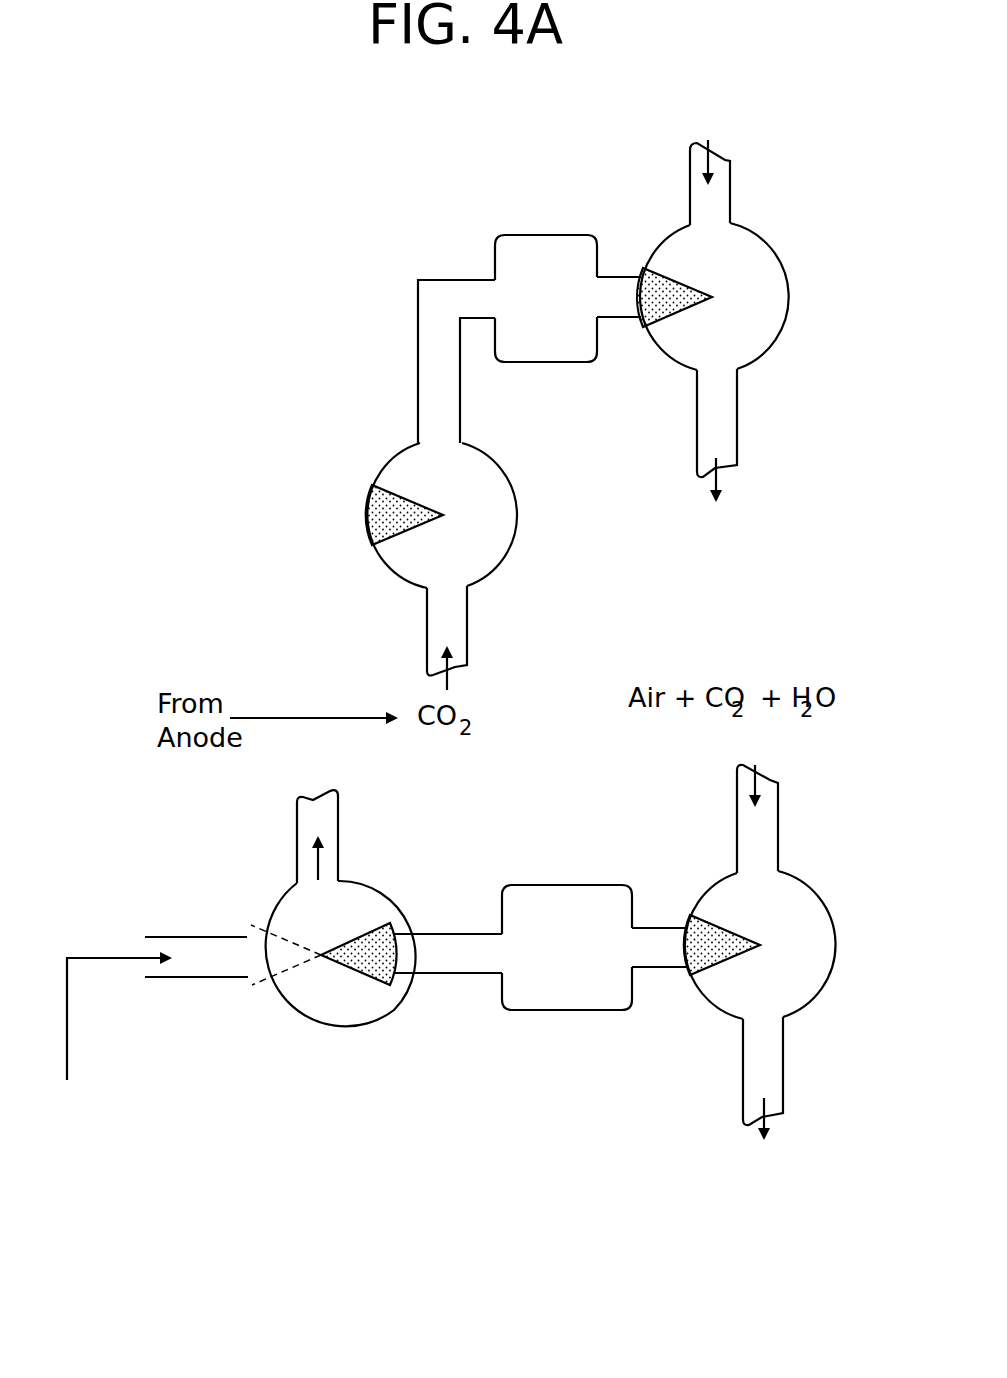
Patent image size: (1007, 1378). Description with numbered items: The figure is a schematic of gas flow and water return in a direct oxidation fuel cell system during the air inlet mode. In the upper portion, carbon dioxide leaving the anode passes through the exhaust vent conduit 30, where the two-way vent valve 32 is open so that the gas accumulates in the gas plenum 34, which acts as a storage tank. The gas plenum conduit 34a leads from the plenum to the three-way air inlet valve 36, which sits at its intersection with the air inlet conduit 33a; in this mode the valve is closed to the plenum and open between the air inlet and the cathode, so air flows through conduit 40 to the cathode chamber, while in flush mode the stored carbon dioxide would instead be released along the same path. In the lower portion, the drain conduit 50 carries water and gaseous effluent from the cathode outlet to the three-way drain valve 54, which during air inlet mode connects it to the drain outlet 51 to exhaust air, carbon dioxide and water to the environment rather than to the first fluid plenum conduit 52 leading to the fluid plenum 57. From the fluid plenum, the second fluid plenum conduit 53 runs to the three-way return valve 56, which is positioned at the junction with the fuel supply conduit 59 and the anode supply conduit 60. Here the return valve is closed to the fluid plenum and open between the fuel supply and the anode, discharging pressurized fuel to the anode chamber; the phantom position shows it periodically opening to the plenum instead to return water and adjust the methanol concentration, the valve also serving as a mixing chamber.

The exhaust vent conduit 30 is at (428, 357).
The vent valve 32 is at (388, 570).
The gas plenum 34 is at (541, 248).
The gas plenum conduit 34a is at (622, 285).
The air inlet conduit 33a is at (718, 177).
The air inlet valve 36 is at (772, 293).
The conduit 40 is at (713, 400).
The drain conduit 50 is at (765, 838).
The drain outlet 51 is at (760, 1075).
The first fluid plenum conduit 52 is at (657, 958).
The second fluid plenum conduit 53 is at (427, 972).
The drain valve 54 is at (707, 1003).
The return valve 56 is at (273, 1010).
The fluid plenum 57 is at (590, 898).
The fuel supply conduit 59 is at (217, 965).
The anode supply conduit 60 is at (328, 818).